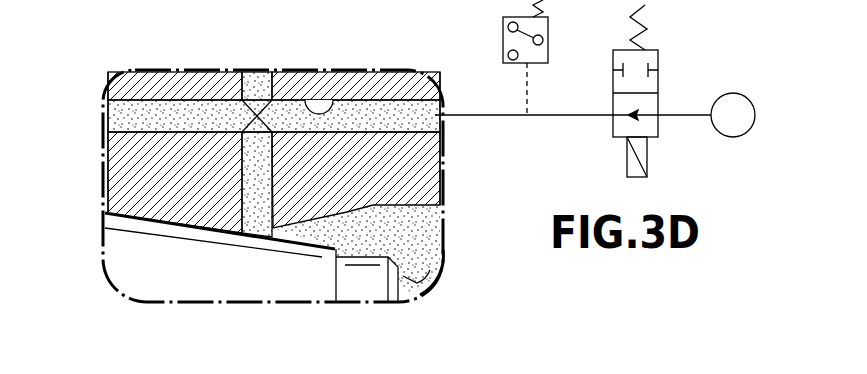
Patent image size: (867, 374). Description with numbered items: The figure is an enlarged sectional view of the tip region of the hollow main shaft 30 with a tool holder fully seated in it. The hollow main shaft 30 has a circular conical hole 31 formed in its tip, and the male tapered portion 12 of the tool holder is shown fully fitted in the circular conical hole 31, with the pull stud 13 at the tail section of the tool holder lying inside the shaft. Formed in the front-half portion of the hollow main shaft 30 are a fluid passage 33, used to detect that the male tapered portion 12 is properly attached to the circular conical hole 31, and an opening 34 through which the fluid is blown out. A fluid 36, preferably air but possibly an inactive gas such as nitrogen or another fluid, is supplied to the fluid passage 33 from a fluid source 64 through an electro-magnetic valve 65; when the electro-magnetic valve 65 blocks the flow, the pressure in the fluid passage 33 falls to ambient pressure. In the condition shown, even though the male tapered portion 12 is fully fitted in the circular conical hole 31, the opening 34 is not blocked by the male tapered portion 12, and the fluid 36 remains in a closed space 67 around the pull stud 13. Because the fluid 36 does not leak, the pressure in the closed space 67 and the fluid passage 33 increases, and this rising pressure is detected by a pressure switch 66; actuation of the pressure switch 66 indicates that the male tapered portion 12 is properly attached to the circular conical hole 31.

The male tapered portion 12 is at (102, 260).
The pull stud 13 is at (442, 262).
The hollow main shaft 30 is at (185, 90).
The circular conical hole 31 is at (127, 219).
The fluid passage 33 is at (305, 100).
The opening 34 is at (267, 235).
The fluid 36 is at (375, 110).
The fluid source 64 is at (733, 113).
The electro-magnetic valve 65 is at (613, 127).
The pressure switch 66 is at (503, 33).
The closed space 67 is at (407, 228).